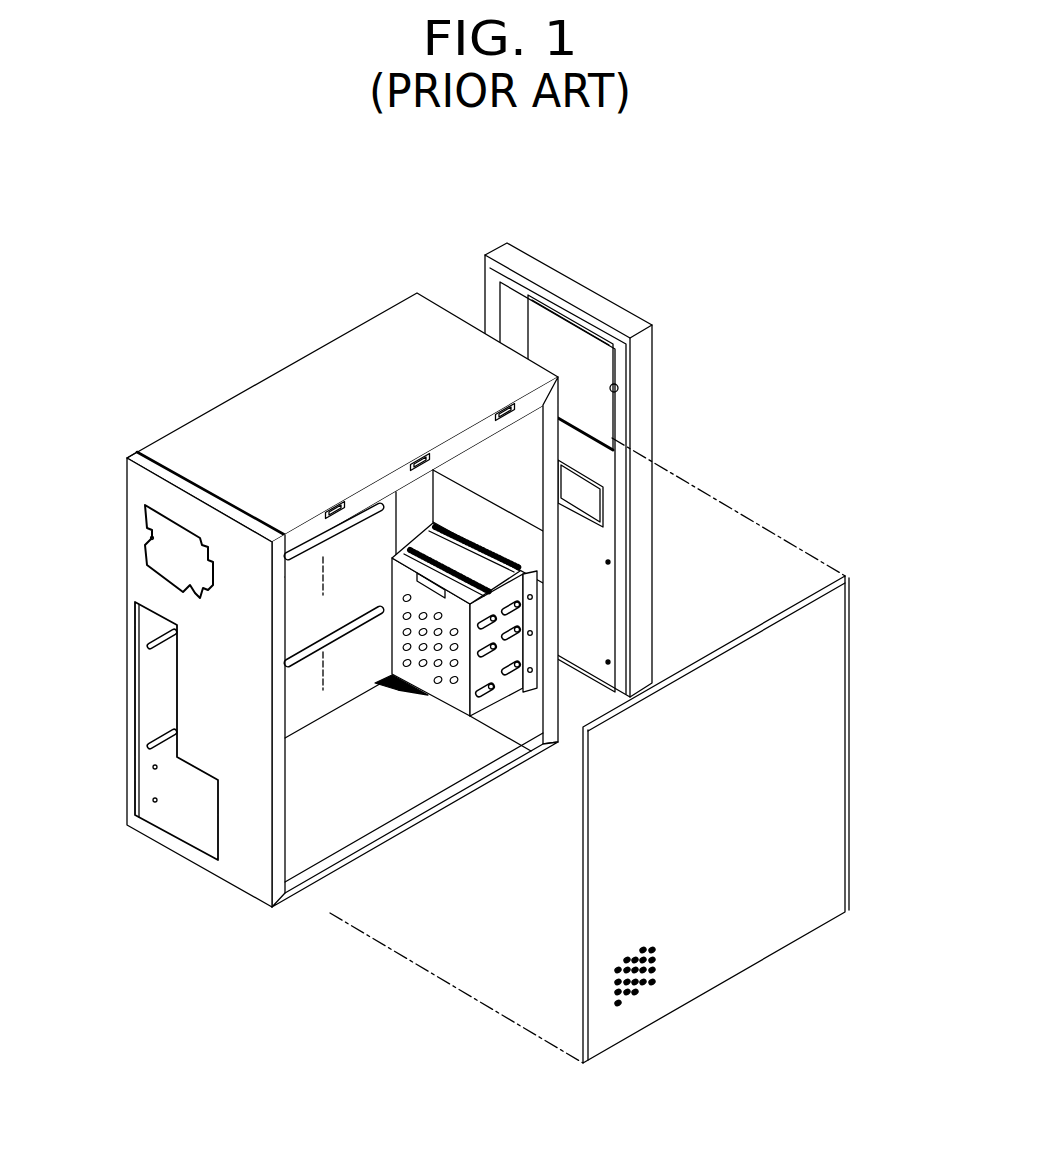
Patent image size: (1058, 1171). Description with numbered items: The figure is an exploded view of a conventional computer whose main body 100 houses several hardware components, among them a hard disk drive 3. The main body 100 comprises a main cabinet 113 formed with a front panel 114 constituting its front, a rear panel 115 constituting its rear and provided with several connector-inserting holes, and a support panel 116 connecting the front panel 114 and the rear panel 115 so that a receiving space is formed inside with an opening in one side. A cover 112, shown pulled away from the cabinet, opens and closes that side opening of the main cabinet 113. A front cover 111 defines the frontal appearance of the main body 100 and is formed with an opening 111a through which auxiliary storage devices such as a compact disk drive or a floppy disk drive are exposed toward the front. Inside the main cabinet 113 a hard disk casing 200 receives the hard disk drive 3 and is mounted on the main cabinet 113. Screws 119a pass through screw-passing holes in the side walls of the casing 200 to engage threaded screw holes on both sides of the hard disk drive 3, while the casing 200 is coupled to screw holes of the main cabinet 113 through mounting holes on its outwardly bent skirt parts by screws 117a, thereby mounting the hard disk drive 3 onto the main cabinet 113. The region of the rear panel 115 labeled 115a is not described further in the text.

The main body 100 is at (405, 555).
The front cover 111 is at (625, 466).
The opening 111a is at (616, 394).
The cover 112 is at (832, 648).
The main cabinet 113 is at (178, 450).
The front panel 114 is at (530, 718).
The rear panel 115 is at (166, 710).
The expansion slot opening 115a is at (150, 687).
The support panel 116 is at (393, 812).
The screws 117a is at (529, 606).
The screws 119a is at (457, 710).
The hard disk casing 200 is at (553, 647).
The hard disk drive 3 is at (491, 568).